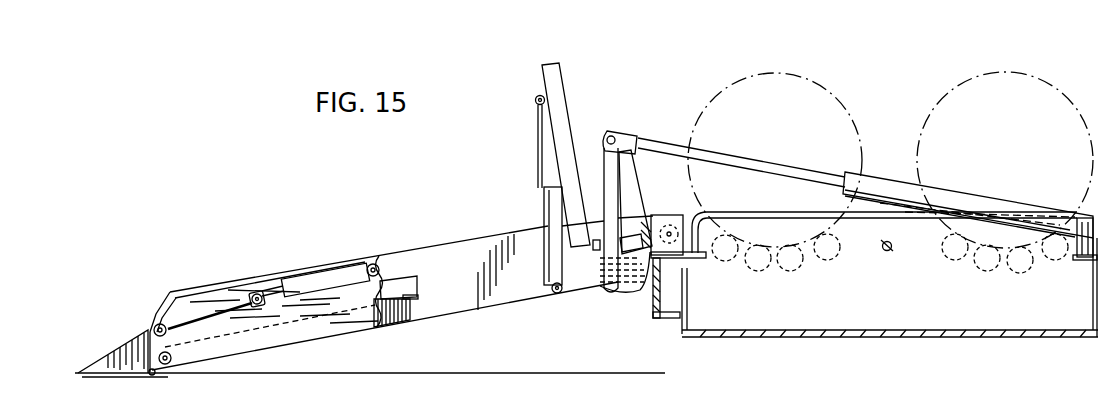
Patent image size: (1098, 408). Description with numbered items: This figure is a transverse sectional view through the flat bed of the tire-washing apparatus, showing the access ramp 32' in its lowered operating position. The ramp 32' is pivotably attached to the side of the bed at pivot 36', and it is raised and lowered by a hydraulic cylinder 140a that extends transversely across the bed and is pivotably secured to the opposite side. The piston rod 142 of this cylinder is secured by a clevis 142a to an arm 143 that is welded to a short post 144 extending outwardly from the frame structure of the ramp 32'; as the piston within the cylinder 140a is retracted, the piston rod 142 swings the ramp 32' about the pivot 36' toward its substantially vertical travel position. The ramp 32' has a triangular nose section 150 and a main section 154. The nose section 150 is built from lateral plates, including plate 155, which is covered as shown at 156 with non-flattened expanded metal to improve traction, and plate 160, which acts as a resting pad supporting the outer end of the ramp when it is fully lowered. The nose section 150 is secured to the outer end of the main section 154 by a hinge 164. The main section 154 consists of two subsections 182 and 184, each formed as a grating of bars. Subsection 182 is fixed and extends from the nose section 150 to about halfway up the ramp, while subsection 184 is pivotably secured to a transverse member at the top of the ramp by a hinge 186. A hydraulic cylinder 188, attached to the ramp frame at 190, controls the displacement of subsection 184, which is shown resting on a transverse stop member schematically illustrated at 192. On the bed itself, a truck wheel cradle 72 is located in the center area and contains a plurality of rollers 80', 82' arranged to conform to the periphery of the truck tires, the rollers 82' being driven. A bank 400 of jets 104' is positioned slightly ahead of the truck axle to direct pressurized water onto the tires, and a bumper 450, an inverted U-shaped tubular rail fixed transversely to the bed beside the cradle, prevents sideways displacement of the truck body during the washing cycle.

The ramp 32' is at (387, 297).
The pivot 36' is at (673, 248).
The truck wheel cradle 72 is at (808, 276).
The rollers 80' is at (782, 268).
The rollers 82' is at (872, 276).
The jets 104' is at (977, 194).
The hydraulic cylinder 140a is at (890, 176).
The piston rod 142 is at (703, 152).
The clevis 142a is at (626, 139).
The arm 143 is at (607, 146).
The short post 144 is at (640, 250).
The nose section 150 is at (94, 342).
The main section 154 is at (495, 303).
The plate 155 is at (159, 309).
The expanded metal covering 156 is at (133, 330).
The plate 160 is at (118, 376).
The hinge 164 is at (157, 377).
The subsection 182 is at (403, 283).
The subsection 184 is at (560, 70).
The hinge 186 is at (595, 242).
The hydraulic cylinder 188 is at (543, 196).
The attachment point 190 is at (553, 294).
The transverse stop member 192 is at (395, 330).
The bank of jets 400 is at (893, 250).
The bumper 450 is at (760, 207).